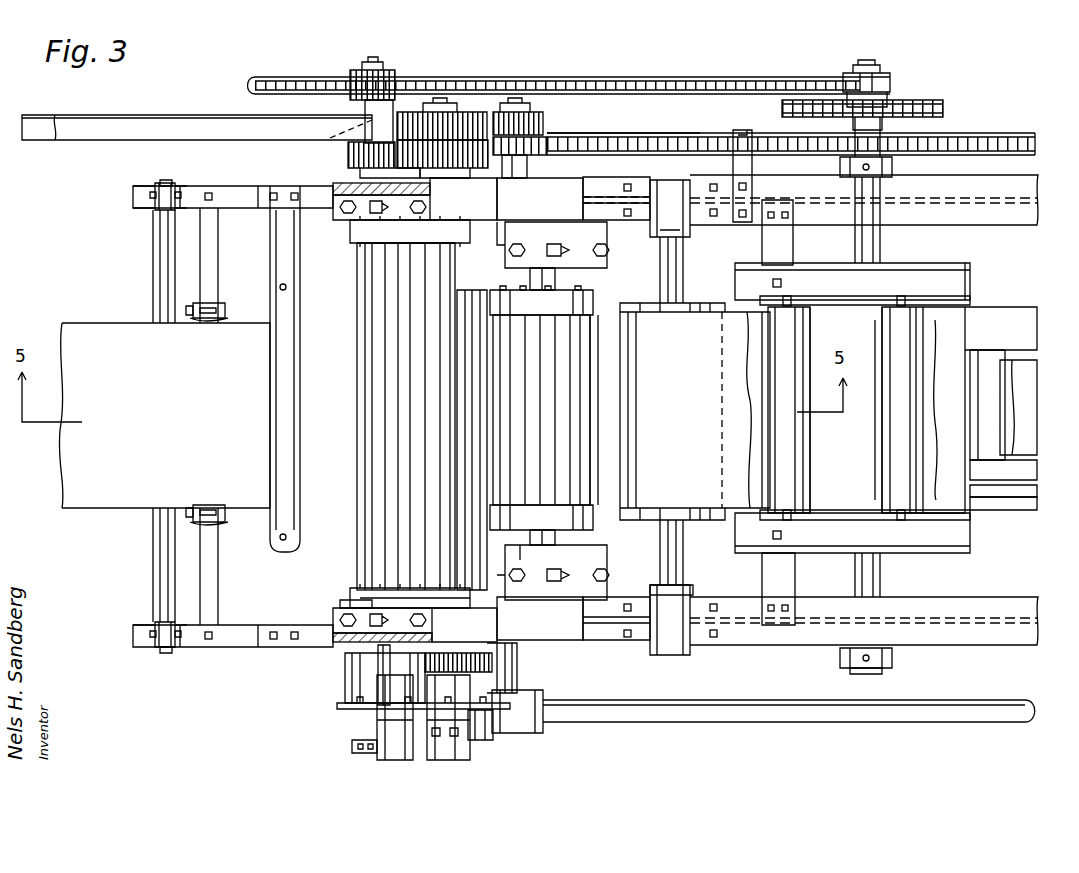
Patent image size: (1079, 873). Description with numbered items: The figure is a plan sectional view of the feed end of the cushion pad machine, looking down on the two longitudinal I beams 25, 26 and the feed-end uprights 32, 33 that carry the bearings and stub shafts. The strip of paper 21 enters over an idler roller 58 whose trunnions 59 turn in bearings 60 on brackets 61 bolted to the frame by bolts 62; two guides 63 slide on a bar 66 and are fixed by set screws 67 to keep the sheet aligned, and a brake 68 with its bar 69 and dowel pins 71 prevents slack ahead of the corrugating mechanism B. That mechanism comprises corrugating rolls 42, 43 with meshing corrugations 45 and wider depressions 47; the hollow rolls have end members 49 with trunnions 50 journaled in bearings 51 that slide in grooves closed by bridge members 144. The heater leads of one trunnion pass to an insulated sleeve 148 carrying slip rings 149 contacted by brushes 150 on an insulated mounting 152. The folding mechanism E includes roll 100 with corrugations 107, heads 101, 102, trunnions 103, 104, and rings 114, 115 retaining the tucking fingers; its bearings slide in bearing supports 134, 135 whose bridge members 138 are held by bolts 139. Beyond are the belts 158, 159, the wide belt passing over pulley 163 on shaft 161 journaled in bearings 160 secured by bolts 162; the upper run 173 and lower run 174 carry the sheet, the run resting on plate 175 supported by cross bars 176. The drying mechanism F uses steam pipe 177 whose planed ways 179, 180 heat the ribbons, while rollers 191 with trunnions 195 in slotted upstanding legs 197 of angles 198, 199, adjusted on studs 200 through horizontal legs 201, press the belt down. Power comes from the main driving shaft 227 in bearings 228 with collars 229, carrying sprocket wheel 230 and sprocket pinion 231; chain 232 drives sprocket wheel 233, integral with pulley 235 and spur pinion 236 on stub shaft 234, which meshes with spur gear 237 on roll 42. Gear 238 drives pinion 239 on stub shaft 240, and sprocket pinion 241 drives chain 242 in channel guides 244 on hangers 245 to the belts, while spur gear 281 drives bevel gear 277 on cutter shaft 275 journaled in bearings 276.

The strip of paper 21 is at (108, 326).
The longitudinal I beam 25 is at (1000, 608).
The longitudinal I beam 26 is at (1002, 186).
The upright 32 is at (560, 630).
The upright 33 is at (570, 205).
The corrugating roll 42 is at (472, 358).
The corrugating roll 43 is at (357, 262).
The corrugations 45 is at (472, 410).
The depressions 47 is at (372, 528).
The end members 49 is at (372, 240).
The trunnions 50 is at (378, 666).
The bearings 51 is at (448, 178).
The idler roller 58 is at (158, 545).
The trunnions 59 is at (167, 180).
The bearings 60 is at (163, 188).
The brackets 61 is at (244, 193).
The bolts 62 is at (178, 190).
The guides 63 is at (215, 302).
The bar 66 is at (200, 245).
The set screws 67 is at (188, 310).
The brake 68 is at (270, 440).
The bar 69 is at (296, 382).
The dowel pins 71 is at (281, 284).
The roll 100 is at (590, 450).
The head 101 is at (585, 530).
The head 102 is at (560, 288).
The trunnion 103 is at (560, 540).
The trunnion 104 is at (558, 278).
The corrugations 107 is at (572, 405).
The ring 114 is at (420, 528).
The ring 115 is at (570, 303).
The bearing support 134 is at (585, 565).
The bearing support 135 is at (535, 242).
The bridge members 138 is at (615, 615).
The bolts 139 is at (605, 250).
The bridge members 144 is at (360, 612).
The insulated sleeve 148 is at (352, 686).
The slip rings 149 is at (400, 755).
The brushes 150 is at (392, 760).
The insulated mounting 152 is at (345, 708).
The belt 158 is at (708, 335).
The belt 159 is at (1002, 400).
The bearings 160 is at (668, 178).
The shaft 161 is at (672, 560).
The bolts 162 is at (720, 610).
The pulley 163 is at (670, 300).
The upper run 173 is at (990, 350).
The lower run 174 is at (870, 325).
The plate 175 is at (1003, 480).
The cross bars 176 is at (778, 245).
The pipe 177 is at (1010, 512).
The way 179 is at (978, 498).
The way 180 is at (1035, 308).
The rollers 191 is at (900, 445).
The trunnions 195 is at (792, 298).
The upstanding legs 197 is at (825, 310).
The angle 198 is at (930, 555).
The angle 199 is at (950, 264).
The studs 200 is at (774, 280).
The horizontal legs 201 is at (958, 288).
The main driving shaft 227 is at (872, 250).
The bearings 228 is at (880, 648).
The collars 229 is at (895, 168).
The sprocket wheel 230 is at (920, 100).
The sprocket pinion 231 is at (850, 72).
The chain 232 is at (668, 76).
The sprocket wheel 233 is at (392, 70).
The stub shaft 234 is at (330, 138).
The pulley 235 is at (352, 95).
The spur pinion 236 is at (347, 158).
The spur gear 237 is at (470, 150).
The spur gear 238 is at (462, 110).
The pinion 239 is at (545, 112).
The stub shaft 240 is at (527, 168).
The sprocket pinion 241 is at (530, 138).
The chain 242 is at (655, 135).
The channel guides 244 is at (980, 133).
The hangers 245 is at (748, 170).
The shaft 275 is at (775, 725).
The bearings 276 is at (525, 735).
The bevel gear 277 is at (480, 742).
The spur gear 281 is at (490, 665).
The corrugating mechanism B is at (397, 290).
The folding mechanism E is at (590, 360).
The drying mechanism F is at (990, 298).